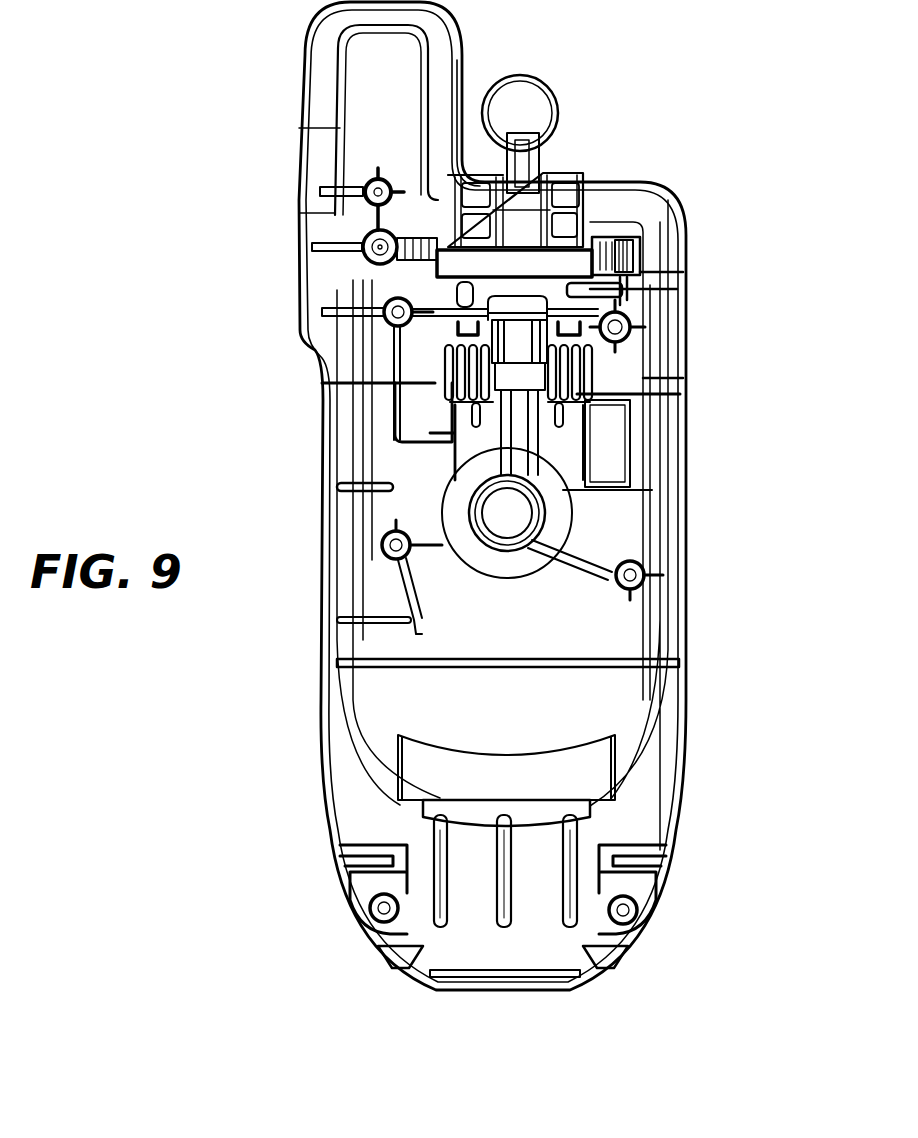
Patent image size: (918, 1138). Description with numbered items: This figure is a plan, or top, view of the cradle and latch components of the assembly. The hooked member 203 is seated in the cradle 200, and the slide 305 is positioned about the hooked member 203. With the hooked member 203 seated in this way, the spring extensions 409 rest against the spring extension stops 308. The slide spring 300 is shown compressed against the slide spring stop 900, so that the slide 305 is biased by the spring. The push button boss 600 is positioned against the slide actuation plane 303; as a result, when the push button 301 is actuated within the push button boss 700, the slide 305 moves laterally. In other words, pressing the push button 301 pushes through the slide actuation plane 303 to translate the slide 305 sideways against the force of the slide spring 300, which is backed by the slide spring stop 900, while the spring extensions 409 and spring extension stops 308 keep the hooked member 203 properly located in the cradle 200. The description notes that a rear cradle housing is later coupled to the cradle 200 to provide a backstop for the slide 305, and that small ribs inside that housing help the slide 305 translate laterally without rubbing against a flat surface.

The cradle 200 is at (683, 648).
The hooked member 203 is at (547, 98).
The slide spring 300 is at (627, 277).
The push button 301 is at (330, 308).
The slide actuation plane 303 is at (412, 225).
The slide 305 is at (578, 262).
The spring extension stops 308 is at (577, 463).
The spring extensions 409 is at (572, 410).
The push button boss 600 is at (430, 178).
The push button boss 700 is at (362, 243).
The slide spring stop 900 is at (642, 257).